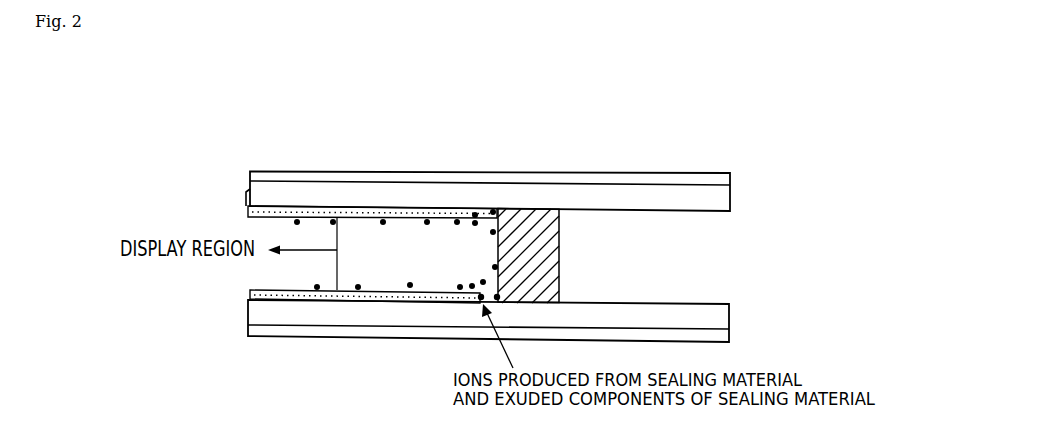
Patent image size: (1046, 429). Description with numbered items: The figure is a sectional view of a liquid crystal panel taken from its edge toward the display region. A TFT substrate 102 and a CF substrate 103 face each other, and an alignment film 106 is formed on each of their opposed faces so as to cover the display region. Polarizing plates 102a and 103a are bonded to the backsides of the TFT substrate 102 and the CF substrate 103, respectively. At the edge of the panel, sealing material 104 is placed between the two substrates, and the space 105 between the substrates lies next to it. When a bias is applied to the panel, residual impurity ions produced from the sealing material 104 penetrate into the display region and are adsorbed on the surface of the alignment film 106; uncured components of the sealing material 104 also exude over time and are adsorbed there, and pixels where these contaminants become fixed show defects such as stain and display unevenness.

The TFT substrate 102 is at (273, 313).
The polarizing plate 102a is at (250, 328).
The CF substrate 103 is at (272, 192).
The polarizing plate 103a is at (250, 176).
The sealing material 104 is at (533, 256).
The liquid crystal layer 105 is at (468, 255).
The alignment film 106 is at (300, 217).